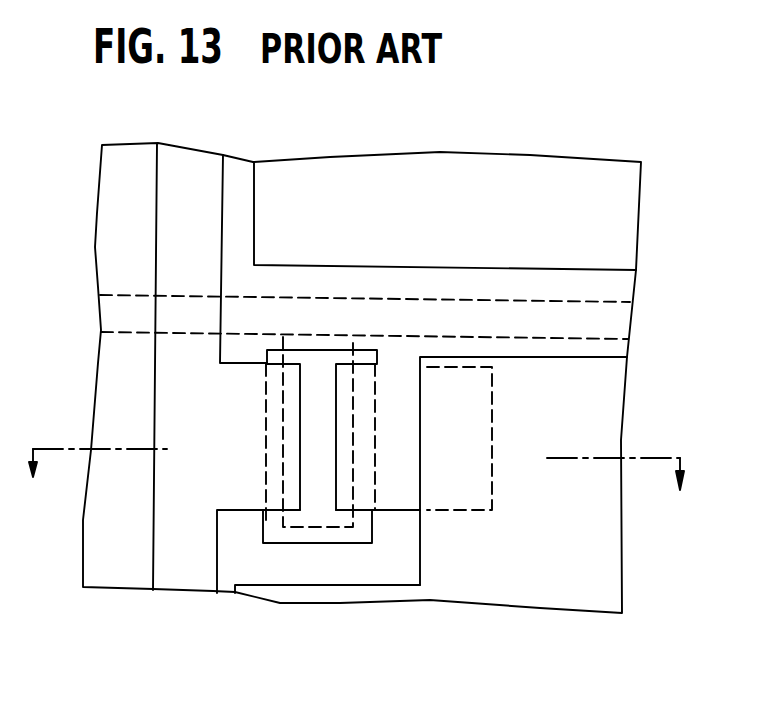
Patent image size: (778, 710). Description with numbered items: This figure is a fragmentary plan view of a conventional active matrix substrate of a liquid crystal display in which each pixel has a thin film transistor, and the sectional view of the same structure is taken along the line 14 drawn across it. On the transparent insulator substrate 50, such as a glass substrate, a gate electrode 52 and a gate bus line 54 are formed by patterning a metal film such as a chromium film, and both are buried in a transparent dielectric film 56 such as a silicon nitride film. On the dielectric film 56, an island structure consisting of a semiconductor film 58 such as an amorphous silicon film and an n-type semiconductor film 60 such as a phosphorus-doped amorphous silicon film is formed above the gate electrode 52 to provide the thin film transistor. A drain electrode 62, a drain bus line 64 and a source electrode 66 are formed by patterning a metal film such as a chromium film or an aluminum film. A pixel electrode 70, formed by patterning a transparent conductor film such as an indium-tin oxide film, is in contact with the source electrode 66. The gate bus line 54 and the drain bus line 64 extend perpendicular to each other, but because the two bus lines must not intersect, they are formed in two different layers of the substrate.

The section line 14 is at (357, 488).
The transparent insulator substrate 50 is at (638, 226).
The gate electrode 52 is at (313, 487).
The gate bus line 54 is at (598, 322).
The transparent dielectric film 56 is at (605, 289).
The semiconductor film 58 is at (318, 432).
The n-type semiconductor film 60 is at (275, 530).
The drain electrode 62 is at (245, 462).
The drain bus line 64 is at (185, 273).
The source electrode 66 is at (343, 383).
The pixel electrode 70 is at (575, 417).